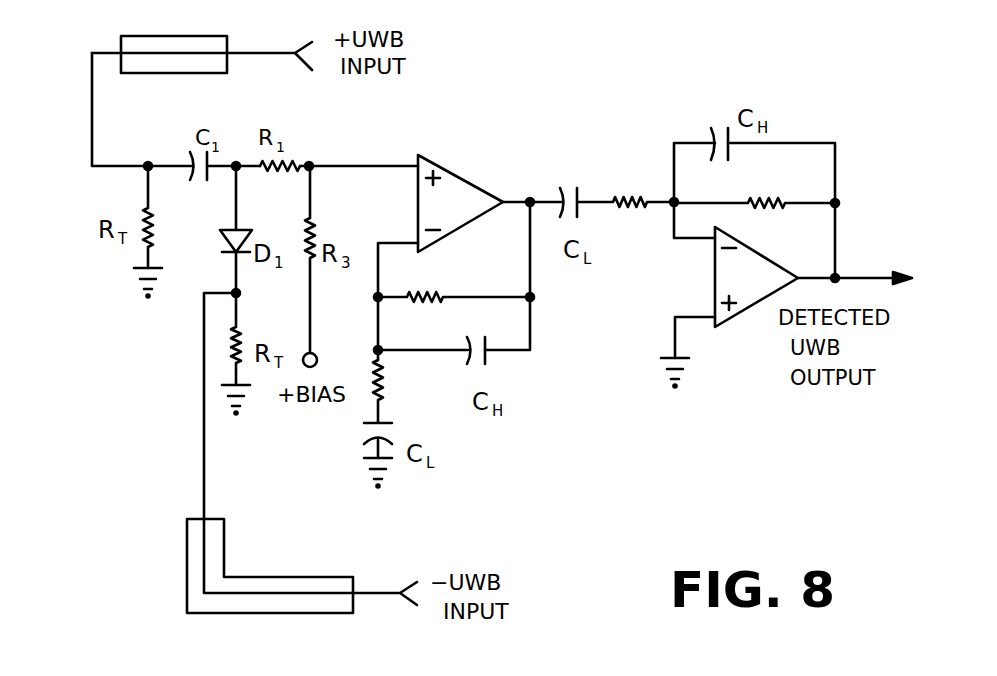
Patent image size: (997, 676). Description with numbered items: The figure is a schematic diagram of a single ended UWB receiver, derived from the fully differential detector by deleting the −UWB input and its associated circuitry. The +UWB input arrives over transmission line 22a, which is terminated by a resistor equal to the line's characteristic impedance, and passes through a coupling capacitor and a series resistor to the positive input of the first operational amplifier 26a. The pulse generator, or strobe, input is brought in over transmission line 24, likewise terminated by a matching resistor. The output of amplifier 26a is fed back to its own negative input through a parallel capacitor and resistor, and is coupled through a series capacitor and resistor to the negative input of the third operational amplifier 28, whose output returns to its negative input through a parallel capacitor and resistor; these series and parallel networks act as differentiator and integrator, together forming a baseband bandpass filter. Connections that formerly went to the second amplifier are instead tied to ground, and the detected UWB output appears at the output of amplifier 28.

The transmission line 22a is at (183, 36).
The transmission line 24 is at (225, 557).
The first operational amplifier 26a is at (470, 180).
The third operational amplifier 28 is at (742, 310).